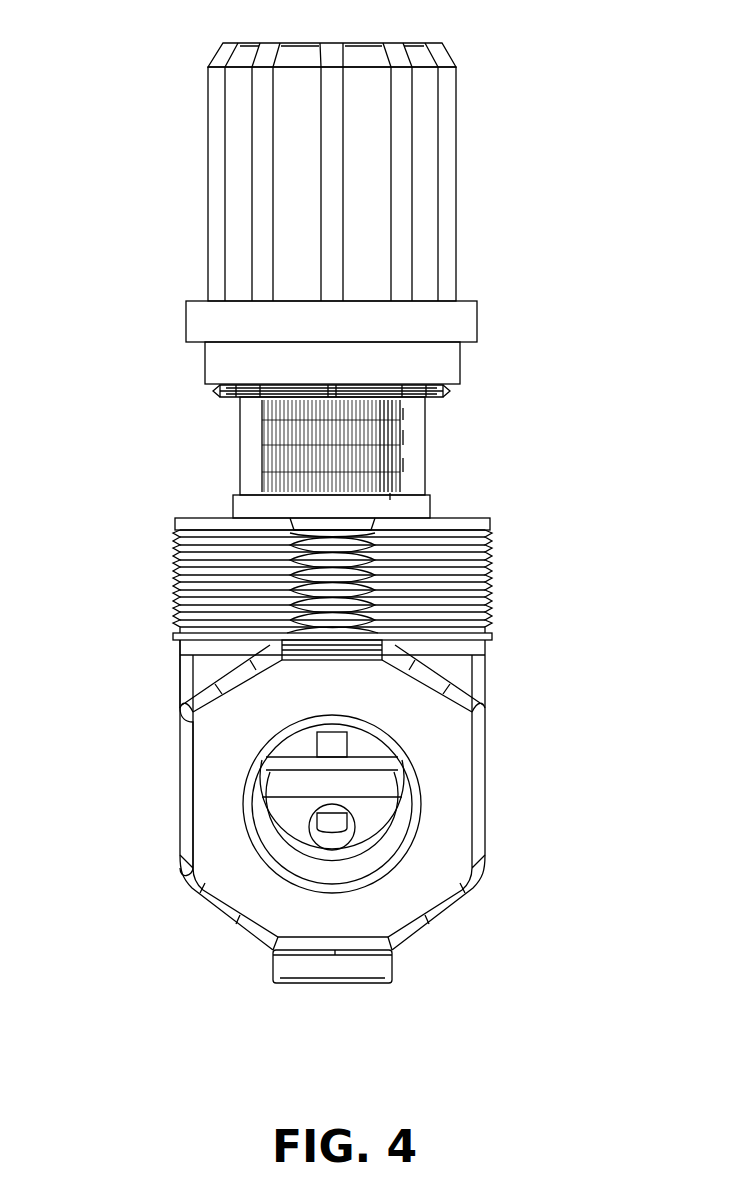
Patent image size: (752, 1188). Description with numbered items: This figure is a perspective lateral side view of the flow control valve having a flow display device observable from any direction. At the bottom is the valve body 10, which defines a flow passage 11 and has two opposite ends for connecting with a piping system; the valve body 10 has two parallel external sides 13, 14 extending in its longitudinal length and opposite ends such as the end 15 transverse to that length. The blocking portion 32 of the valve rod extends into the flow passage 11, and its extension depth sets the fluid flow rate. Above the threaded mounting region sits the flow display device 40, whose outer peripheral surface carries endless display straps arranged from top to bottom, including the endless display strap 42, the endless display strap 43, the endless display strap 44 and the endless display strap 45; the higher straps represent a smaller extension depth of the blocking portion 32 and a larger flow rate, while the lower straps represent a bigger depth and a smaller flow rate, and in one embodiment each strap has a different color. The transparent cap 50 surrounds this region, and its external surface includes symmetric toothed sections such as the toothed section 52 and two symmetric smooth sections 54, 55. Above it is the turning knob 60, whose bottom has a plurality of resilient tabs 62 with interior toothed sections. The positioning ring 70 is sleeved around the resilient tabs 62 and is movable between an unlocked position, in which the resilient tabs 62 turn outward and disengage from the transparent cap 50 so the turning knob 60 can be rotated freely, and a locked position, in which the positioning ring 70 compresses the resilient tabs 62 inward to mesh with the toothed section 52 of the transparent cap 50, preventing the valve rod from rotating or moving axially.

The valve body 10 is at (309, 811).
The flow passage 11 is at (262, 818).
The external side 13 is at (485, 768).
The external side 14 is at (180, 767).
The end 15 is at (405, 893).
The blocking portion 32 is at (345, 820).
The flow display device 40 is at (497, 476).
The endless display strap 42 is at (403, 408).
The endless display strap 43 is at (403, 430).
The endless display strap 44 is at (403, 458).
The endless display strap 45 is at (469, 520).
The transparent cap 50 is at (259, 457).
The toothed section 52 is at (297, 432).
The smooth section 54 is at (415, 478).
The smooth section 55 is at (253, 455).
The turning knob 60 is at (456, 180).
The resilient tab 62 is at (255, 388).
The positioning ring 70 is at (468, 322).